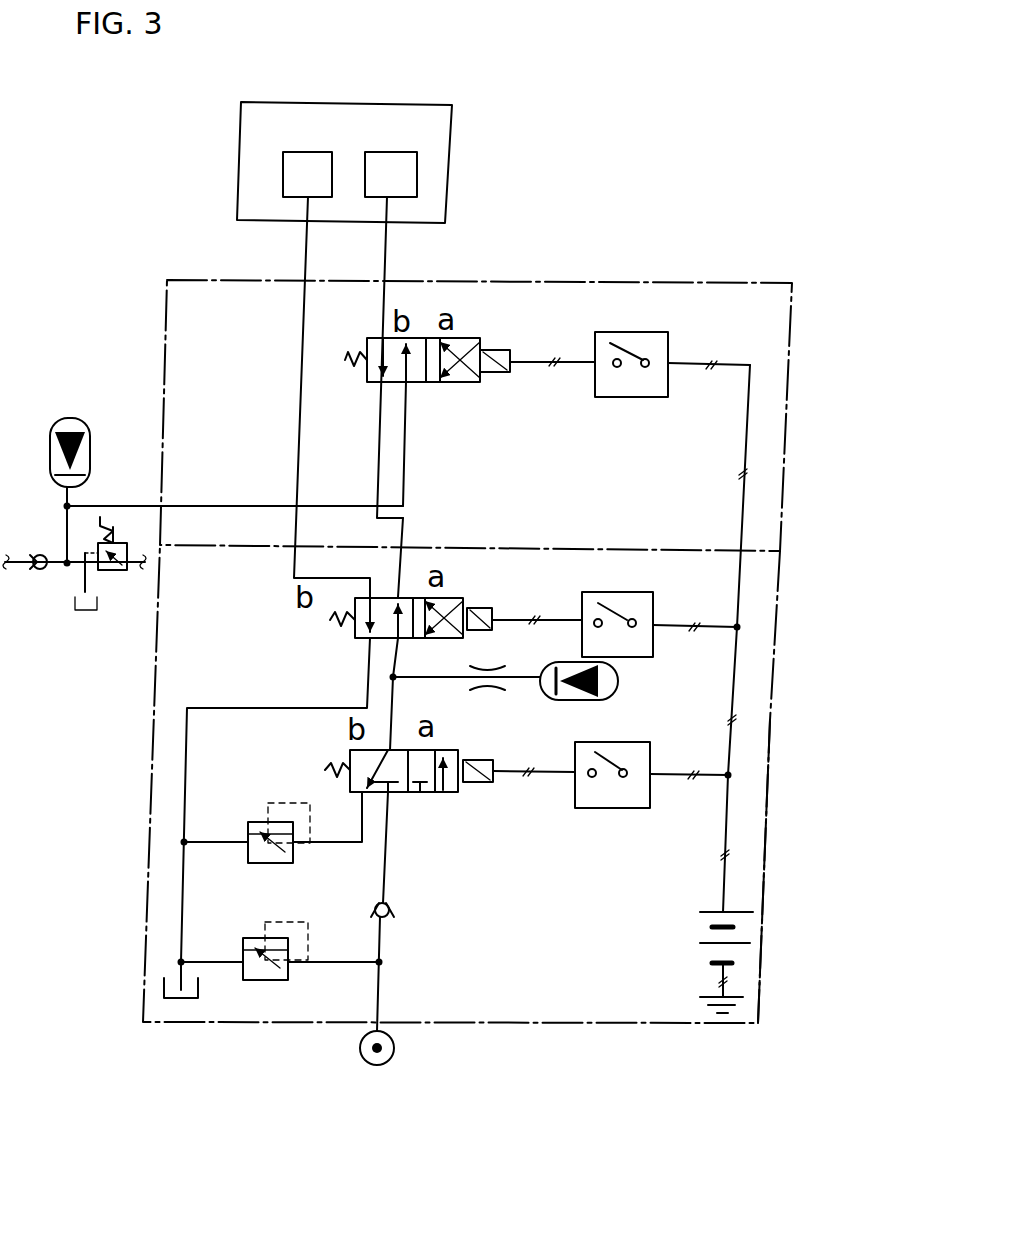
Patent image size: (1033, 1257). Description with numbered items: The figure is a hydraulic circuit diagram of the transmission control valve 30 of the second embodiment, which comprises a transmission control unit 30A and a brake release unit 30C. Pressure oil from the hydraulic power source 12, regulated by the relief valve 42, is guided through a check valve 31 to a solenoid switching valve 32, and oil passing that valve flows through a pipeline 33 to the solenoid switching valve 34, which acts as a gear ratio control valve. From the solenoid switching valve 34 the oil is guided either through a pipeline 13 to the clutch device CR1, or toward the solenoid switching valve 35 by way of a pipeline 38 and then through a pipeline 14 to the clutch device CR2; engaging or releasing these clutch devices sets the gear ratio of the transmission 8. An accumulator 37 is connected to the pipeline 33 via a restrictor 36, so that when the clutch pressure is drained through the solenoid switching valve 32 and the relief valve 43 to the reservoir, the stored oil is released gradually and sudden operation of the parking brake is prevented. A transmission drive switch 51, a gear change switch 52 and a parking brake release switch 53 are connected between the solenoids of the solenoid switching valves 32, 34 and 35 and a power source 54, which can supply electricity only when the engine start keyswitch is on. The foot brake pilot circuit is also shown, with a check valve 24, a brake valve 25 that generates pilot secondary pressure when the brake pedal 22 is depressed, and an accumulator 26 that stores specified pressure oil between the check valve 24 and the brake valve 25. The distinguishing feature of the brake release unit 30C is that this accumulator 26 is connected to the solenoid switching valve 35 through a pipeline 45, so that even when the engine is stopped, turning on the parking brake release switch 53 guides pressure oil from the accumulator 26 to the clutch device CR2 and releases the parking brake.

The transmission 8 is at (452, 130).
The clutch device CR1 is at (287, 170).
The clutch device CR2 is at (403, 175).
The pipeline 13 is at (306, 250).
The pipeline 14 is at (386, 257).
The hydraulic power source 12 is at (394, 1052).
The brake pedal 22 is at (127, 533).
The check valve 24 is at (32, 573).
The brake valve 25 is at (113, 573).
The accumulator 26 is at (127, 412).
The transmission control valve 30 is at (777, 675).
The transmission control unit 30A is at (767, 860).
The brake release unit 30C is at (787, 442).
The check valve 31 is at (390, 917).
The solenoid switching valve 32 is at (453, 795).
The pipeline 33 is at (395, 695).
The solenoid switching valve 34 is at (467, 638).
The solenoid switching valve 35 is at (473, 385).
The restrictor 36 is at (510, 683).
The accumulator 37 is at (618, 682).
The pipeline 38 is at (403, 567).
The relief valve 42 is at (270, 982).
The relief valve 43 is at (272, 865).
The pipeline 45 is at (233, 505).
The transmission drive switch 51 is at (625, 808).
The gear change switch 52 is at (653, 600).
The parking brake release switch 53 is at (670, 343).
The power source 54 is at (707, 920).